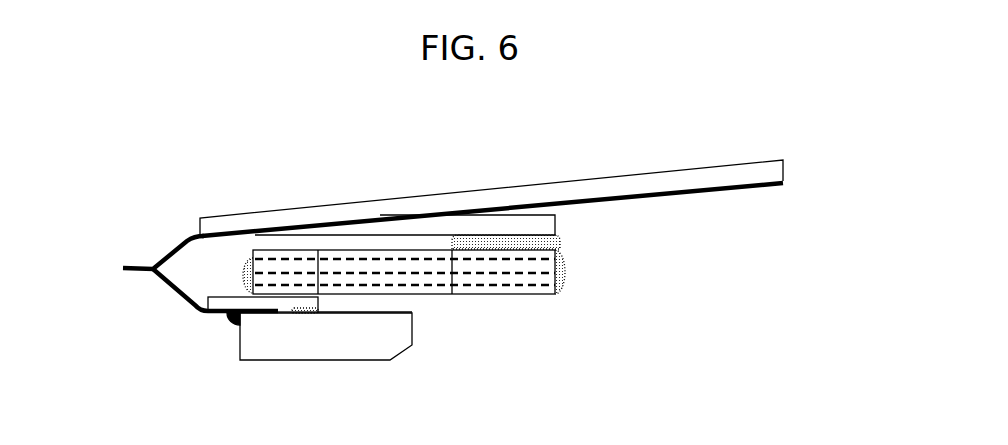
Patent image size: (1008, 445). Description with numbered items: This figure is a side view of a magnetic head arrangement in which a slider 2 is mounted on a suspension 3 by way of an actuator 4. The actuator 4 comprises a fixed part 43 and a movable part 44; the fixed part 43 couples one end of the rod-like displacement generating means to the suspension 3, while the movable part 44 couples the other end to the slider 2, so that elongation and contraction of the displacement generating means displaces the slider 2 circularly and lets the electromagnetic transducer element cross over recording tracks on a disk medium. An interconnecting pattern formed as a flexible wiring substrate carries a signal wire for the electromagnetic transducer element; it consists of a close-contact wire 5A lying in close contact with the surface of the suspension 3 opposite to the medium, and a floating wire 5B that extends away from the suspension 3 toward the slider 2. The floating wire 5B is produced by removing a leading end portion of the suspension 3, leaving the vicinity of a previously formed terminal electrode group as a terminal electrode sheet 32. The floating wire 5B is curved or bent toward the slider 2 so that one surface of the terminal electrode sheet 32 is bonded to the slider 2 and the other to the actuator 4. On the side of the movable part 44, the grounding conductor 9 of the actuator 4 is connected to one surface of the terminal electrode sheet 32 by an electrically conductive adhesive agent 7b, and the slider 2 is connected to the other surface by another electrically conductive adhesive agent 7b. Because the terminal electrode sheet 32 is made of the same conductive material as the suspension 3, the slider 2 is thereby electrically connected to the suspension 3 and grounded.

The slider 2 is at (248, 337).
The suspension 3 is at (538, 184).
The actuator 4 is at (529, 308).
The close-contact wire 5A is at (692, 194).
The floating wire 5B is at (158, 282).
The electrically conductive adhesive agent 7b is at (245, 284).
The grounding conductor 9 is at (506, 259).
The terminal electrode sheet 32 is at (207, 300).
The fixed part 43 is at (549, 294).
The movable part 44 is at (289, 249).